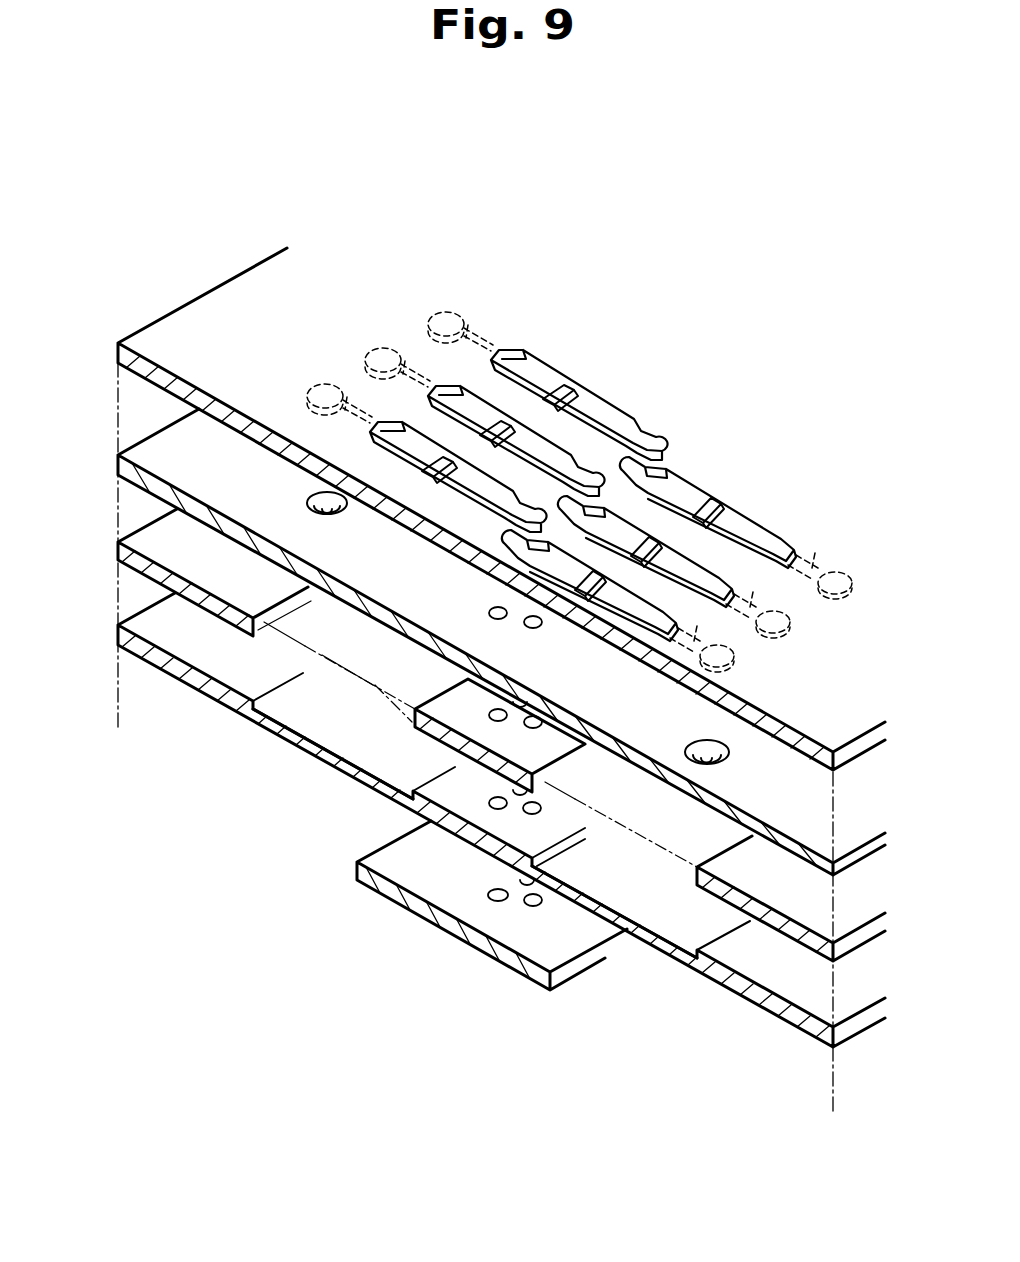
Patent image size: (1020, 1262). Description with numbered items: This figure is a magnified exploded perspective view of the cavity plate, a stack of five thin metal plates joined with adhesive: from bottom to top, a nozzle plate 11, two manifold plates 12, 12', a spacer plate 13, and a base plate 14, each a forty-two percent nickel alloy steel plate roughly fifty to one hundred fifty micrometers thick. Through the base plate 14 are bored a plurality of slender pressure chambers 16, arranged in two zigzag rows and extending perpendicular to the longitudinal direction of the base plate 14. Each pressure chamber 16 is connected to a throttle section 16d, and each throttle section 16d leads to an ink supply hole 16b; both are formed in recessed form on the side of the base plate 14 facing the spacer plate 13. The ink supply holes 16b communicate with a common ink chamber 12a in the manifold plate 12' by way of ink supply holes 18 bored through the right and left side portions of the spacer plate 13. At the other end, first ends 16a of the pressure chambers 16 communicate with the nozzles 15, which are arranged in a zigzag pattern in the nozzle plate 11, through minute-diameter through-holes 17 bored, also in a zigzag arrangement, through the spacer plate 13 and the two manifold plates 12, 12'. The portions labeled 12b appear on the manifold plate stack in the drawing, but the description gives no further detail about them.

The nozzle plate 11 is at (402, 875).
The manifold plate 12 is at (466, 814).
The manifold plate 12' is at (374, 680).
The common ink chamber 12a is at (286, 610).
The thin spacer portion 12b is at (295, 722).
The spacer plate 13 is at (153, 441).
The base plate 14 is at (200, 318).
The nozzles 15 is at (527, 910).
The pressure chambers 16 is at (533, 372).
The first ends 16a is at (626, 424).
The ink supply holes 16b is at (447, 320).
The throttle sections 16d is at (810, 570).
The through-holes 17 is at (533, 625).
The ink supply holes 18 is at (330, 510).